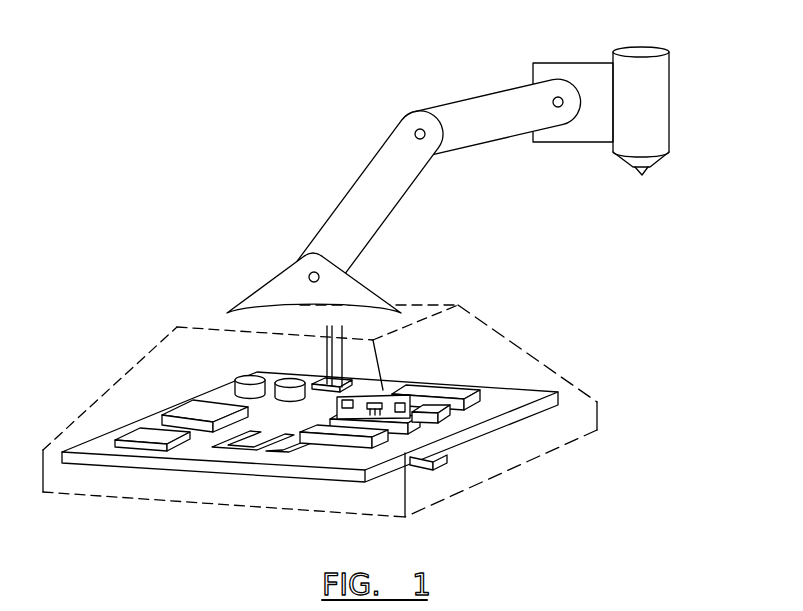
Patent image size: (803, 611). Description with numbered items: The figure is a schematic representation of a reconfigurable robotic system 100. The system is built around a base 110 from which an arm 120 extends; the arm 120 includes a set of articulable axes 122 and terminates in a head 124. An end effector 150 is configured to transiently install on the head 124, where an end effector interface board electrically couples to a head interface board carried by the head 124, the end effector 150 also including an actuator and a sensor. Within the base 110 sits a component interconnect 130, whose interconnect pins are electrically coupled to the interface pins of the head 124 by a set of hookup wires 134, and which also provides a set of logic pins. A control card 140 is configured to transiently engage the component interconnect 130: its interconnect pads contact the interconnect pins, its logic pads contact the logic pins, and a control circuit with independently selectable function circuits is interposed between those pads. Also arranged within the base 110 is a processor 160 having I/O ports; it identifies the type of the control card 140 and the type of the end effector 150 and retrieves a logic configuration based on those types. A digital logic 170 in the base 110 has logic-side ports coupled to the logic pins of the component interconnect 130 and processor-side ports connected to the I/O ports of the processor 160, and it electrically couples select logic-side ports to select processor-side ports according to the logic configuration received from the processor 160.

The reconfigurable robotic system 100 is at (184, 103).
The base 110 is at (600, 430).
The arm 120 is at (357, 201).
The set of articulable axes 122 is at (309, 277).
The head 124 is at (598, 90).
The component interconnect 130 is at (405, 420).
The set of hookup wires 134 is at (383, 392).
The control card 140 is at (404, 393).
The end effector 150 is at (653, 100).
The processor 160 is at (148, 434).
The digital logic 170 is at (193, 412).